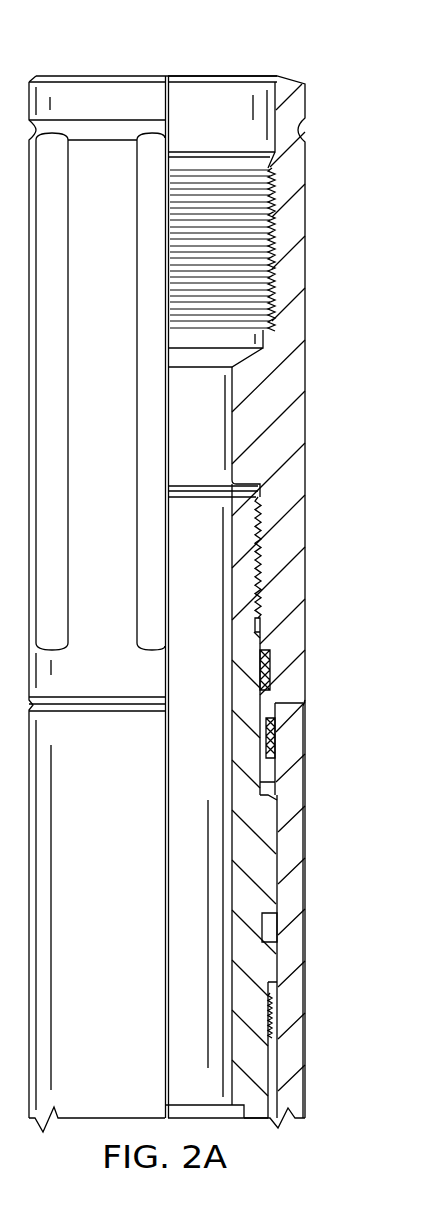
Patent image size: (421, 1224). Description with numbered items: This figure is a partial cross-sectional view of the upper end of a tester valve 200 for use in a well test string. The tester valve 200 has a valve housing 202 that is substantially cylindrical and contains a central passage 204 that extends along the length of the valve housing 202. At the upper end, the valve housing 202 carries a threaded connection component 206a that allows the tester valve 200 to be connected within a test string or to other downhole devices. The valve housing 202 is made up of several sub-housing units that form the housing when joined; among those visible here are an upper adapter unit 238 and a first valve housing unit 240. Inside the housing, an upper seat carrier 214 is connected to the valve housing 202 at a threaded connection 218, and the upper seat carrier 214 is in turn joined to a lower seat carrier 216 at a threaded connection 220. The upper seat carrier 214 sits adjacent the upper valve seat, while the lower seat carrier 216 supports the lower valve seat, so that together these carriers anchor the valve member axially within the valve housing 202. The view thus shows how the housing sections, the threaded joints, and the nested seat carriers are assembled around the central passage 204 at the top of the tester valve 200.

The tester valve 200 is at (128, 61).
The valve housing 202 is at (307, 473).
The central passage 204 is at (214, 436).
The threaded connection component 206a is at (194, 166).
The upper seat carrier 214 is at (270, 863).
The lower seat carrier 216 is at (273, 1016).
The threaded connection 218 is at (262, 558).
The threaded connection 220 is at (277, 1010).
The upper adapter unit 238 is at (297, 374).
The first valve housing unit 240 is at (293, 931).